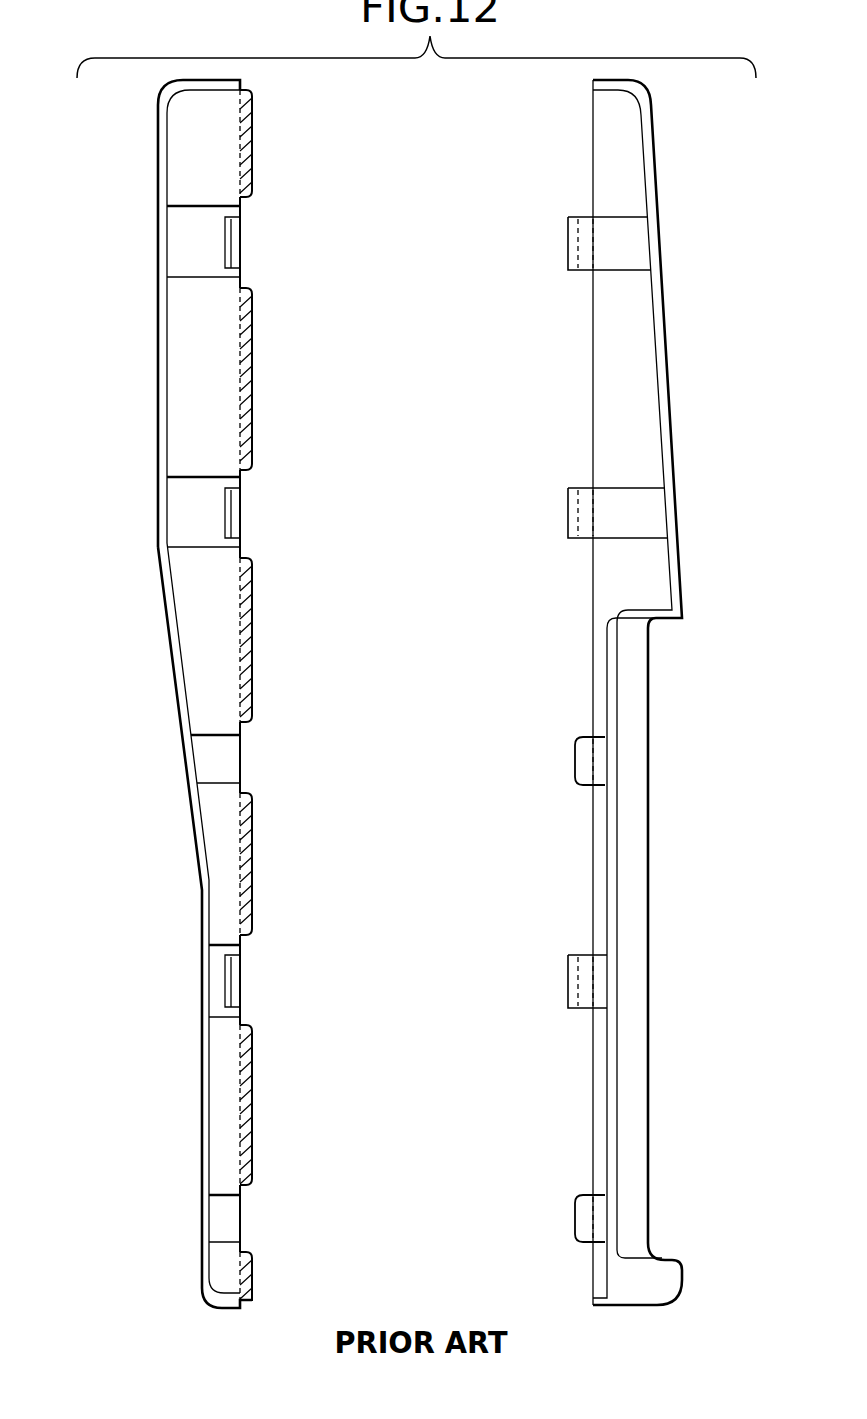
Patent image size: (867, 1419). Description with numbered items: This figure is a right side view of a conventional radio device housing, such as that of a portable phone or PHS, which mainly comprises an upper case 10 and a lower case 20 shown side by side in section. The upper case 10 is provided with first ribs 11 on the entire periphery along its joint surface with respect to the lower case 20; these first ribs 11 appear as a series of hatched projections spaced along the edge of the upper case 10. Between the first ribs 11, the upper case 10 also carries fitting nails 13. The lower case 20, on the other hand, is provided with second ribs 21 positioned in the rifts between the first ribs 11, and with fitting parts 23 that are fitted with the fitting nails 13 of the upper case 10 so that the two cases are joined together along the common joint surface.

The upper case 10 is at (192, 146).
The first ribs 11 is at (254, 146).
The fitting nails 13 is at (235, 240).
The lower case 20 is at (640, 323).
The second ribs 21 is at (574, 764).
The fitting parts 23 is at (590, 241).